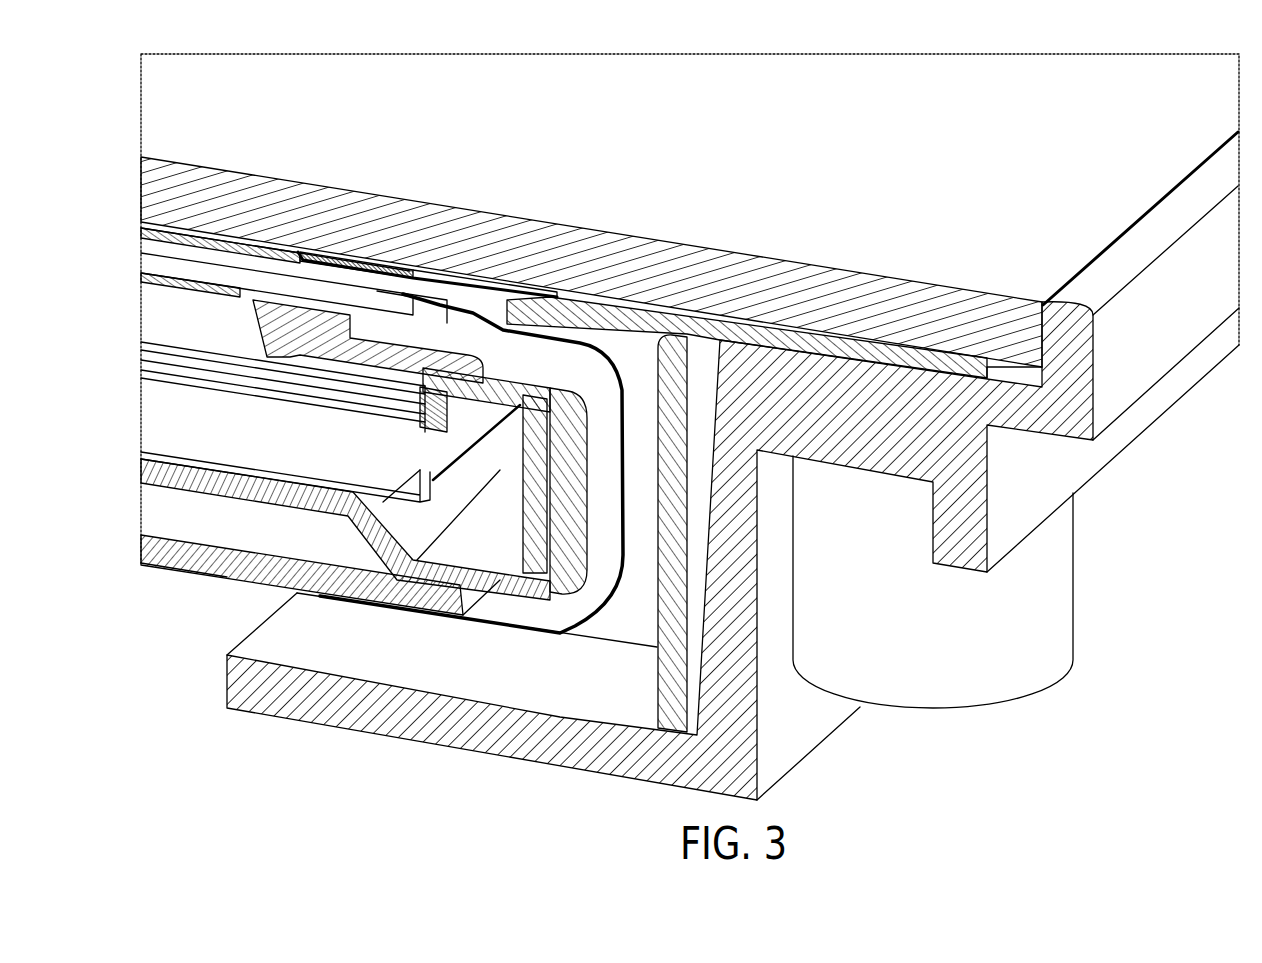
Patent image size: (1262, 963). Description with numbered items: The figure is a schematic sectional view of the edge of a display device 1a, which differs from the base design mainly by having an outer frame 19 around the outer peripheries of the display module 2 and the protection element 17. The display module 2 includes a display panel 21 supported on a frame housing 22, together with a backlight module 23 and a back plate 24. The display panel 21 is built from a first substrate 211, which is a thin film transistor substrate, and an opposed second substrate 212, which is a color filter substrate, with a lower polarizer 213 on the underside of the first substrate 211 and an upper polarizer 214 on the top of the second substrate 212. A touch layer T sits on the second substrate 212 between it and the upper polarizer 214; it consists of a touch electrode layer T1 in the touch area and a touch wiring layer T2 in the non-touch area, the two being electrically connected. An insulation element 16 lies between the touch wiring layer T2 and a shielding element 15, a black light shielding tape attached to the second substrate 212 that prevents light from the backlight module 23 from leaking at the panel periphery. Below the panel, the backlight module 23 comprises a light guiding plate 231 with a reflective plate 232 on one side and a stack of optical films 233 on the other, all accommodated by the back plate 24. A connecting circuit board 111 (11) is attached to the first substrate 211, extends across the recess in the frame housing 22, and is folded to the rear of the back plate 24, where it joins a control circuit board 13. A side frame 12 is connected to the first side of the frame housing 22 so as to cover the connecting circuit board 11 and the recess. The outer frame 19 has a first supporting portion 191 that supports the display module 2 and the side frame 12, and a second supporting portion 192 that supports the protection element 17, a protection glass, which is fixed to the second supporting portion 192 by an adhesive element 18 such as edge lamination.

The display device 1a is at (128, 82).
The protection element 17 is at (141, 182).
The touch electrode layer T1 is at (217, 243).
The touch layer T is at (355, 262).
The touch wiring layer T2 is at (362, 277).
The display panel 21 is at (56, 216).
The upper polarizer 214 is at (141, 233).
The second substrate 212 is at (141, 250).
The first substrate 211 is at (141, 262).
The lower polarizer 213 is at (141, 277).
The insulation element 16 is at (333, 266).
The shielding element 15 is at (433, 280).
The connecting circuit board 111 is at (483, 307).
The connecting circuit board 11 is at (477, 620).
The adhesive element 18 is at (697, 317).
The second supporting portion 192 is at (777, 335).
The outer frame 19 is at (838, 380).
The frame housing 22 is at (260, 330).
The backlight module 23 is at (82, 350).
The optical films 233 is at (134, 341).
The light guiding plate 231 is at (152, 415).
The reflective plate 232 is at (141, 457).
The back plate 24 is at (141, 472).
The control circuit board 13 is at (141, 547).
The display module 2 is at (132, 569).
The first supporting portion 191 is at (302, 653).
The side frame 12 is at (662, 690).